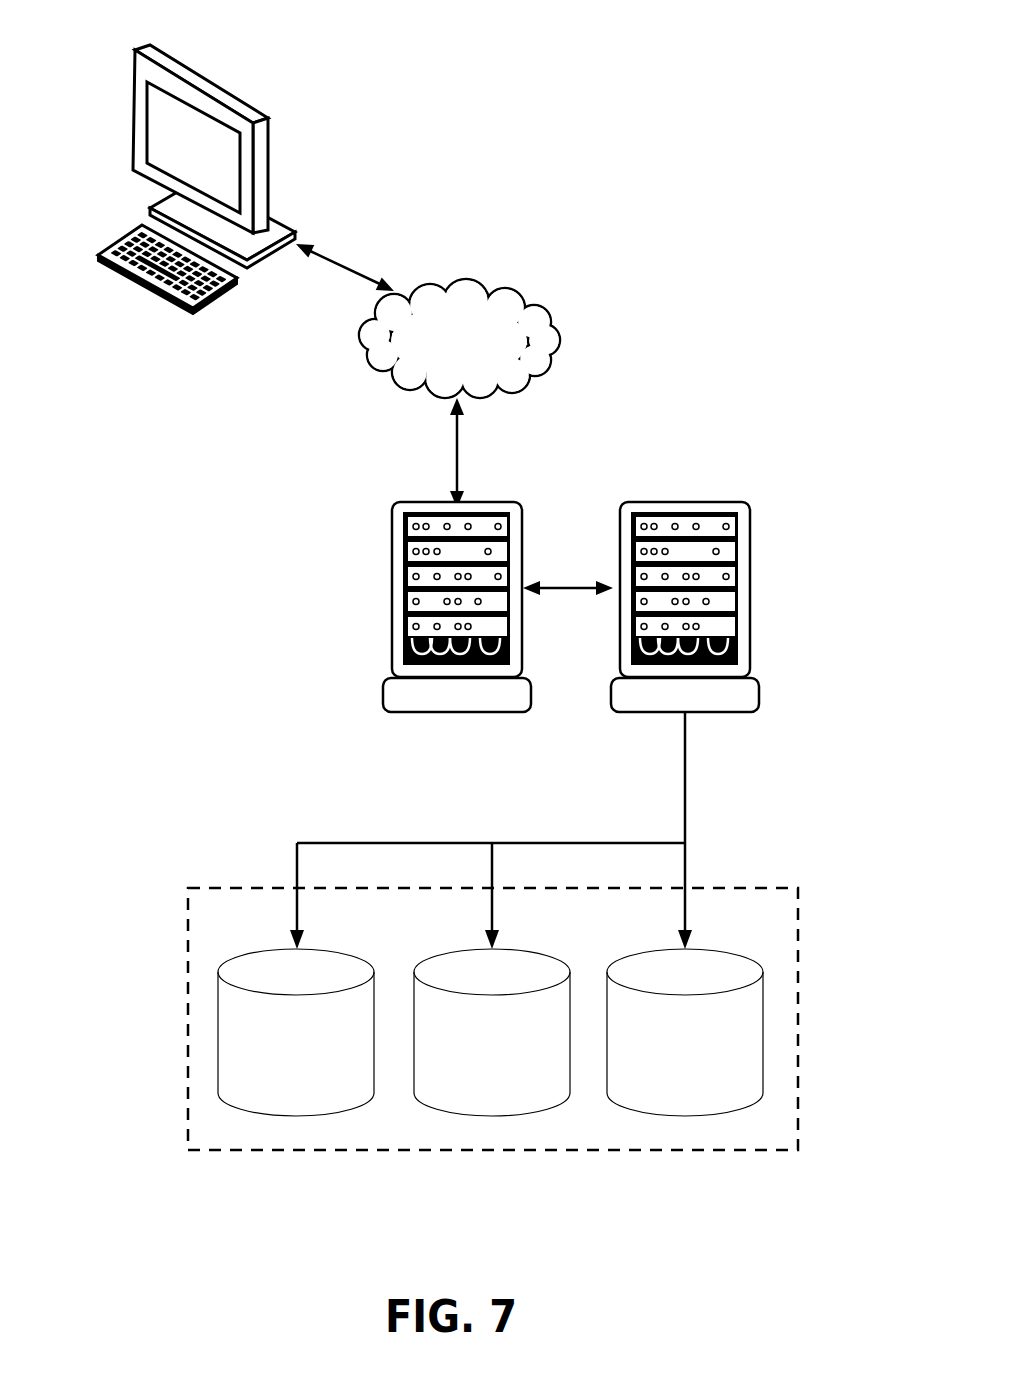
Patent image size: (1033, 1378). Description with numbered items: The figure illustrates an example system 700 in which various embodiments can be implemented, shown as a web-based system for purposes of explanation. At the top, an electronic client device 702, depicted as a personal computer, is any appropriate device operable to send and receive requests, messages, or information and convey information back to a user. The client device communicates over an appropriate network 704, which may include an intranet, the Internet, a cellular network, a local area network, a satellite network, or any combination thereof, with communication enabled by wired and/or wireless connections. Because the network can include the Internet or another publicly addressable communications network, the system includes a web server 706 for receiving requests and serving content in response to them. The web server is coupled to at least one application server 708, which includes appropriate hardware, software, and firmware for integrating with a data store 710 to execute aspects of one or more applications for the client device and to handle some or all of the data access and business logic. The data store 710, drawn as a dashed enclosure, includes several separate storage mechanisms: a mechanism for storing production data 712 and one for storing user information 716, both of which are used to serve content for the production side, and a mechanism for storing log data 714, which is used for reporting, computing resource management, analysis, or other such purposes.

The system 700 is at (739, 320).
The electronic client device 702 is at (217, 87).
The network 704 is at (490, 292).
The web server 706 is at (390, 587).
The application server 708 is at (615, 687).
The data store 710 is at (223, 1153).
The production data 712 is at (295, 1113).
The log data 714 is at (492, 1113).
The user information 716 is at (683, 1113).